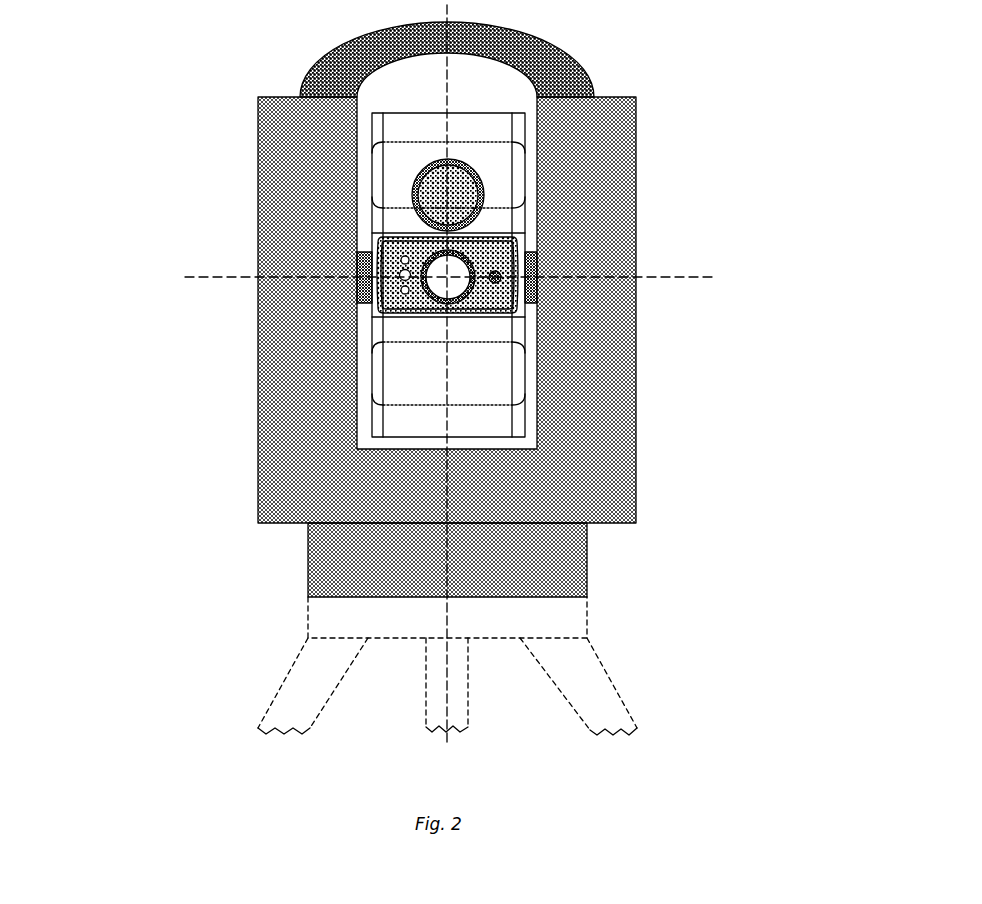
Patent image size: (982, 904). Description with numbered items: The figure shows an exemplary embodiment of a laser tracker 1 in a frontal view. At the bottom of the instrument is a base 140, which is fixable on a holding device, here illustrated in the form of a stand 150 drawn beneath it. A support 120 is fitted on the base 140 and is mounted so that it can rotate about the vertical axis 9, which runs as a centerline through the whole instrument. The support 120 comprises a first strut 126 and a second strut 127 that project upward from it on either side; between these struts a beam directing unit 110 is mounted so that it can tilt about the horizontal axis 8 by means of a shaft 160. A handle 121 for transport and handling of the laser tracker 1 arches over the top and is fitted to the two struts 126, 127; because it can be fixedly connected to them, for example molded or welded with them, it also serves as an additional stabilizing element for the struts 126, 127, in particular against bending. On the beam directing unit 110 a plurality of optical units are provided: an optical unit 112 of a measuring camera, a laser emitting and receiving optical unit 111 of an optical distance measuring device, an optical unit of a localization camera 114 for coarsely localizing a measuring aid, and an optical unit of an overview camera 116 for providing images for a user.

The laser tracker 1 is at (223, 77).
The horizontal axis 8 is at (658, 277).
The vertical axis 9 is at (447, 483).
The beam directing unit 110 is at (398, 156).
The laser emitting and receiving optical unit 111 is at (425, 289).
The optical unit of a measuring camera 112 is at (437, 198).
The optical unit of a localization camera 114 is at (403, 271).
The optical unit of an overview camera 116 is at (497, 280).
The support 120 is at (568, 487).
The handle 121 is at (573, 67).
The first strut 126 is at (283, 165).
The second strut 127 is at (603, 165).
The base 140 is at (568, 569).
The stand 150 is at (317, 625).
The shaft 160 is at (530, 262).